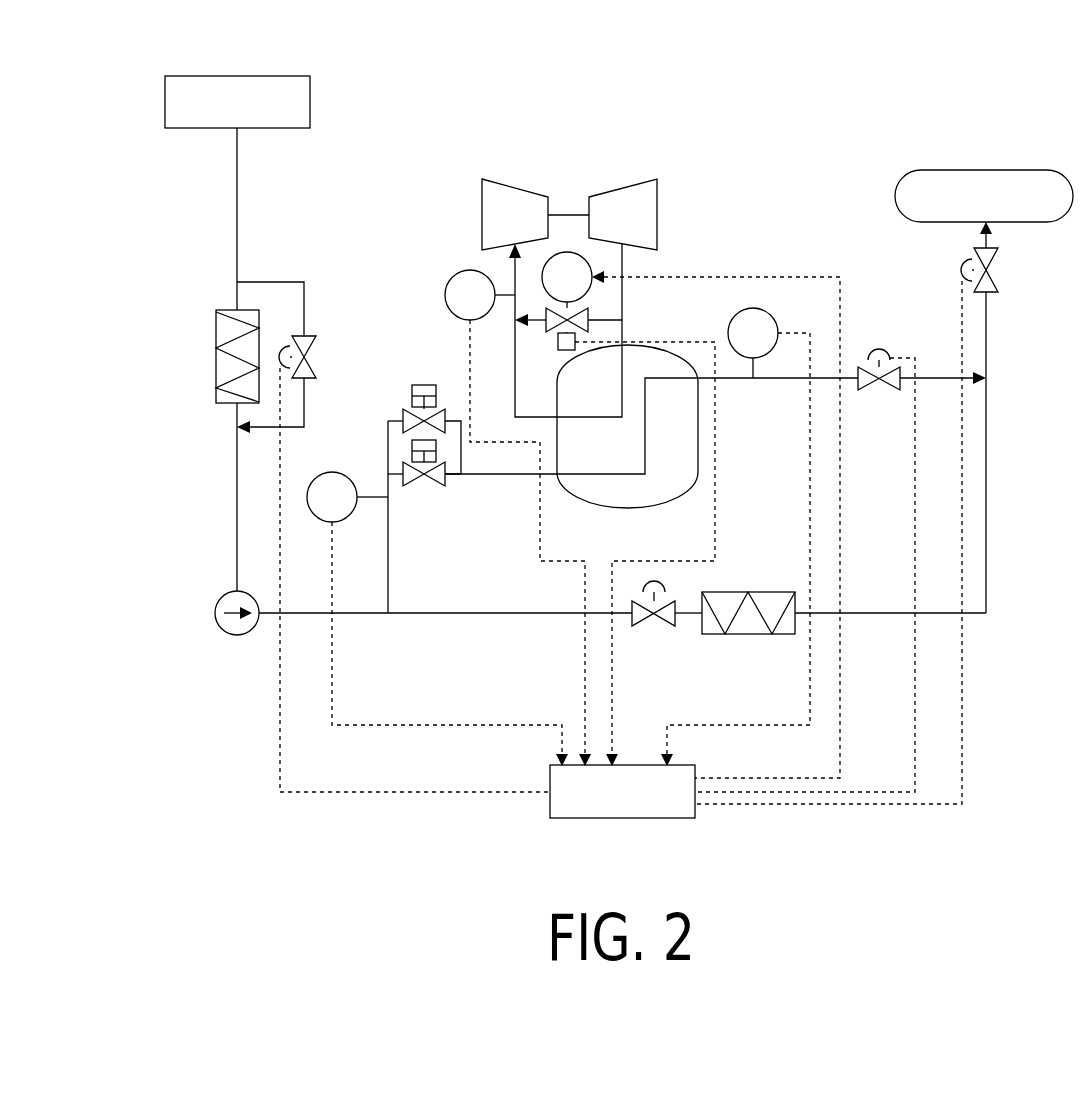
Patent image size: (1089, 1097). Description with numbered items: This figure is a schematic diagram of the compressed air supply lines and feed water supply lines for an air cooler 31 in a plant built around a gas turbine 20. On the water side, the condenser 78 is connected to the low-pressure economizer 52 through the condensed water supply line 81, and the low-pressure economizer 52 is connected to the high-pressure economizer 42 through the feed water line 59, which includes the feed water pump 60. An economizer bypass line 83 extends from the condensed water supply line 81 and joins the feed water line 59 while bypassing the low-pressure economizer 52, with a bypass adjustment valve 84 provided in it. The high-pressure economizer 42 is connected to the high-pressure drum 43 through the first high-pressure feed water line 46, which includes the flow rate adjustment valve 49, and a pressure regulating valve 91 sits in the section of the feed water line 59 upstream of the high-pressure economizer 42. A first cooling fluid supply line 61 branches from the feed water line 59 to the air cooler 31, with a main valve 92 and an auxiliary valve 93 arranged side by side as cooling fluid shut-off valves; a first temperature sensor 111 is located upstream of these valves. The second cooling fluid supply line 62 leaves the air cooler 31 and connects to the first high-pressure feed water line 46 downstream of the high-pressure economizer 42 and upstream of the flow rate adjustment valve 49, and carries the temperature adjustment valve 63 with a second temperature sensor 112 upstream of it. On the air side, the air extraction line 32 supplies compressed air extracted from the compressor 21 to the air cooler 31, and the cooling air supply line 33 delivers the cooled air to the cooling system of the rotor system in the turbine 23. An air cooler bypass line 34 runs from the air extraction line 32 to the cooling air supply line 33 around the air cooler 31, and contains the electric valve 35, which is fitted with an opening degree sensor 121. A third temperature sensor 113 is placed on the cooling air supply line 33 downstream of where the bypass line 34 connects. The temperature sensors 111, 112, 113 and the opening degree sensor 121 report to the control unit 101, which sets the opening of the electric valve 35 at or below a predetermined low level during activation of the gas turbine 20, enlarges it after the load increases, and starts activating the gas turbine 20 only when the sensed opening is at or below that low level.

The gas turbine 20 is at (592, 123).
The condenser 78 is at (237, 76).
The condensed water supply line 81 is at (237, 198).
The low-pressure economizer 52 is at (216, 358).
The economizer bypass line 83 is at (276, 282).
The bypass adjustment valve 84 is at (317, 345).
The feed water pump 60 is at (216, 608).
The feed water line 59 is at (462, 613).
The first cooling fluid supply line 61 is at (388, 582).
The auxiliary valve 93 is at (403, 412).
The main valve 92 is at (418, 488).
The first temperature sensor 111 is at (332, 472).
The turbine 23 is at (514, 192).
The compressor 21 is at (618, 193).
The electric valve 35 is at (542, 277).
The air extraction line 32 is at (624, 268).
The third temperature sensor 113 is at (448, 285).
The air cooler bypass line 34 is at (602, 316).
The opening degree sensor 121 is at (558, 344).
The cooling air supply line 33 is at (512, 376).
The air cooler 31 is at (708, 445).
The second cooling fluid supply line 62 is at (824, 380).
The second temperature sensor 112 is at (753, 308).
The temperature adjustment valve 63 is at (880, 354).
The first high-pressure feed water line 46 is at (986, 402).
The flow rate adjustment valve 49 is at (974, 268).
The high-pressure drum 43 is at (895, 194).
The pressure regulating valve 91 is at (660, 594).
The high-pressure economizer 42 is at (735, 592).
The control unit 101 is at (695, 766).